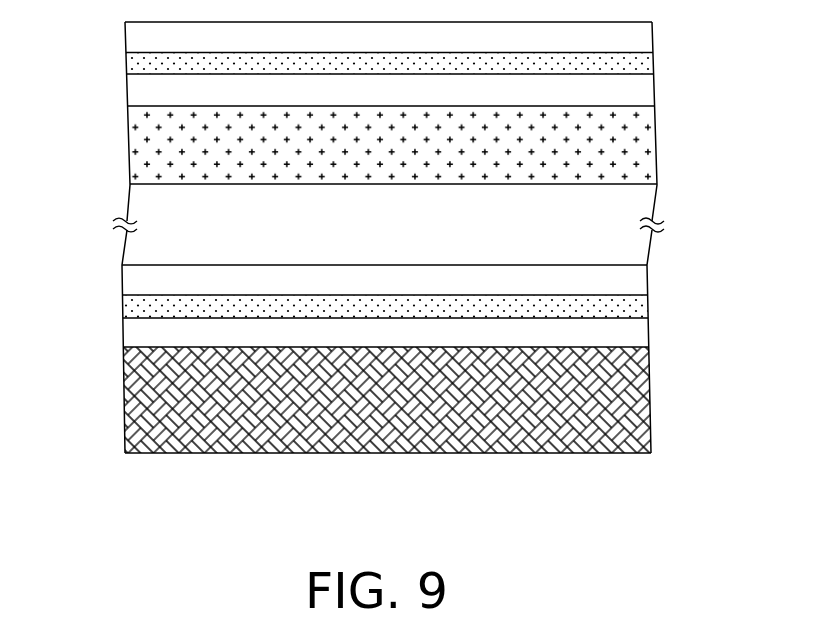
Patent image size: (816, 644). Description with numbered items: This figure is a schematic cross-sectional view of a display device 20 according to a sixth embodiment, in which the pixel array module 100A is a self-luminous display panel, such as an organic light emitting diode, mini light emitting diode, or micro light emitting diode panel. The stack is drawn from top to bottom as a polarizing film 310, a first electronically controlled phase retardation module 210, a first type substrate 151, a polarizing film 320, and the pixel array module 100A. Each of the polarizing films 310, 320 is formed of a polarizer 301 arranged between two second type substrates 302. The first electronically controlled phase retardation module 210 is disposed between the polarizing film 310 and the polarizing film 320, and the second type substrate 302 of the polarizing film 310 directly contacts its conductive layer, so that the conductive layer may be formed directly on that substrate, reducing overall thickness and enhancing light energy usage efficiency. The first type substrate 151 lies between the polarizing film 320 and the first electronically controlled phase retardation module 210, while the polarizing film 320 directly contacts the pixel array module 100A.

The display device 20 is at (767, 543).
The pixel array module 100A is at (113, 346).
The first type substrate 151 is at (640, 200).
The first electronically controlled phase retardation module 210 is at (112, 105).
The polarizer 301 is at (637, 62).
The second type substrate 302 is at (637, 37).
The polarizing film 310 is at (112, 22).
The polarizing film 320 is at (113, 266).